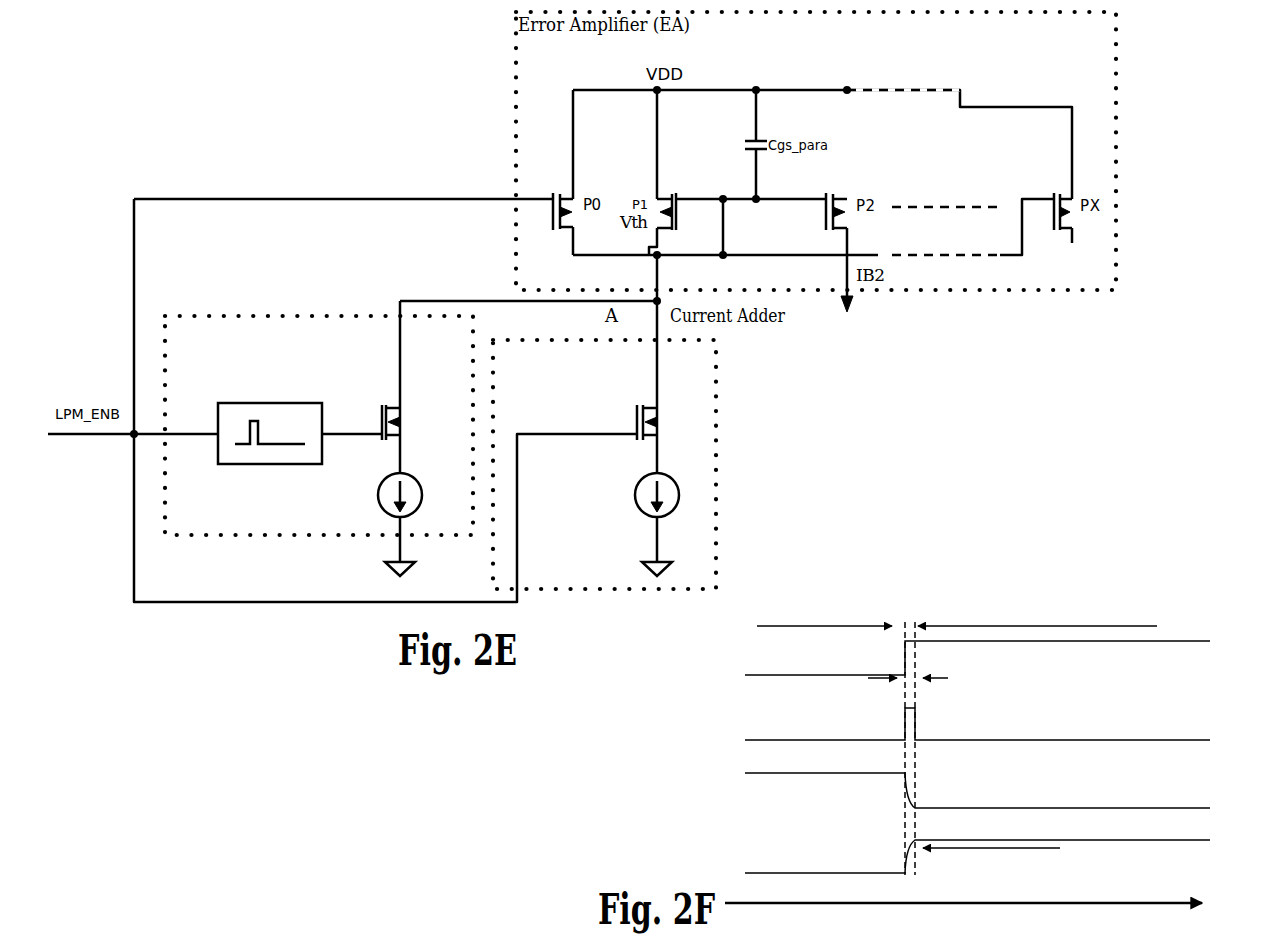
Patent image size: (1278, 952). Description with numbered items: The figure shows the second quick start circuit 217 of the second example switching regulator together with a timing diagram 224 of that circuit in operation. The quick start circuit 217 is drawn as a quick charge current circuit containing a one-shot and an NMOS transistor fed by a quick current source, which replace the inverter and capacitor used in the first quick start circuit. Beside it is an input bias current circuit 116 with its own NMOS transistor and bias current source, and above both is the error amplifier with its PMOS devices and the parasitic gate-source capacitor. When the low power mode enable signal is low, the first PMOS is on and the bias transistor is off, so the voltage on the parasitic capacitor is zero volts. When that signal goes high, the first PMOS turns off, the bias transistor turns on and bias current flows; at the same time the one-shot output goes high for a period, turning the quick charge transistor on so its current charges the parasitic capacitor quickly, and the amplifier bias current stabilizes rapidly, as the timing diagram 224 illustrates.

In FIG. 2E, the second quick start circuit 217 is at (319, 438).
In FIG. 2E, the input bias current circuit 116 is at (604, 464).
In FIG. 2F, the timing diagram 224 is at (995, 579).